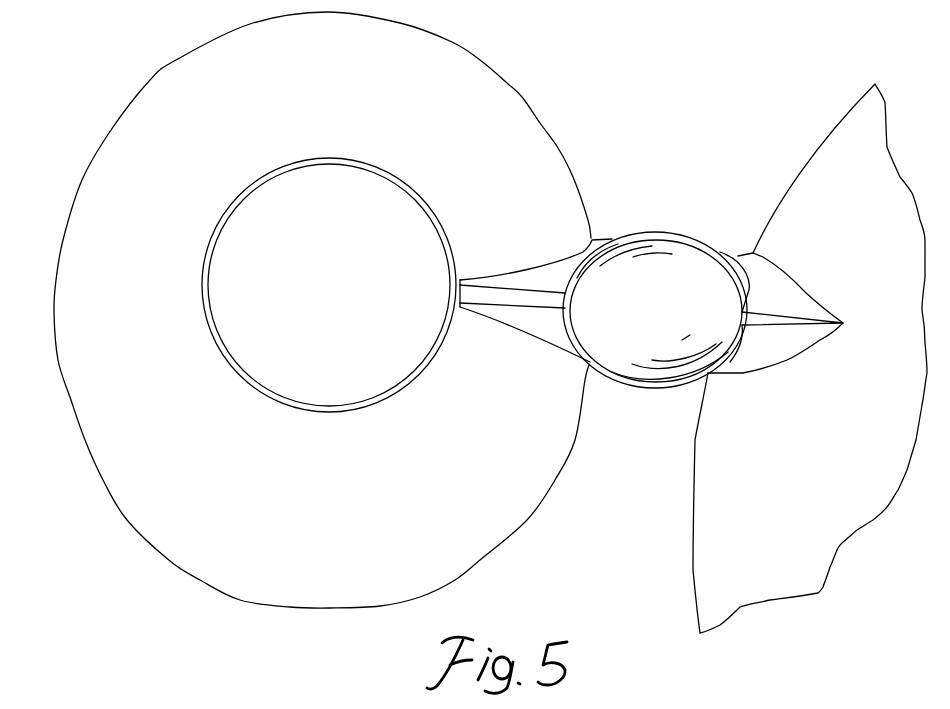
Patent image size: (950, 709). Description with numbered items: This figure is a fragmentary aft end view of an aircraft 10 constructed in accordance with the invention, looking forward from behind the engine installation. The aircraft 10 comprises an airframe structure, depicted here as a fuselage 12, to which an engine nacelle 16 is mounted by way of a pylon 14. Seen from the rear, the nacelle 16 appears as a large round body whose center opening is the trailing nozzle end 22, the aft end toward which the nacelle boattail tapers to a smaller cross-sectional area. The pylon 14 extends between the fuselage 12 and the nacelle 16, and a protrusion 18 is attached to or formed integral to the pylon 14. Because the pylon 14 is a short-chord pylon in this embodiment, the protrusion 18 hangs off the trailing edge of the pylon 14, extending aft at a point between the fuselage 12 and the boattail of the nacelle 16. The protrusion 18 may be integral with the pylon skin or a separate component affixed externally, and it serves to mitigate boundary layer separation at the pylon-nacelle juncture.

The aircraft 10 is at (76, 66).
The fuselage 12 is at (837, 150).
The pylon 14 is at (780, 290).
The engine nacelle 16 is at (512, 104).
The protrusion 18 is at (660, 232).
The trailing nozzle end 22 is at (305, 166).